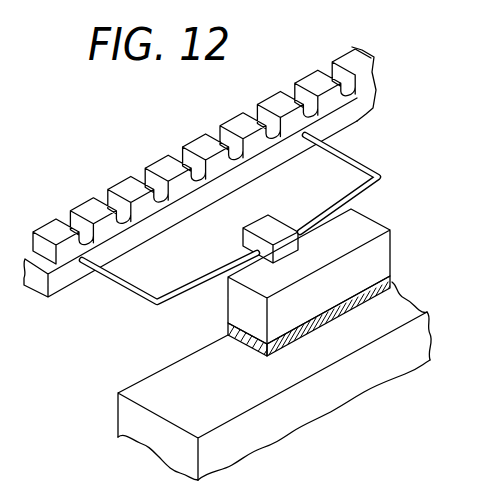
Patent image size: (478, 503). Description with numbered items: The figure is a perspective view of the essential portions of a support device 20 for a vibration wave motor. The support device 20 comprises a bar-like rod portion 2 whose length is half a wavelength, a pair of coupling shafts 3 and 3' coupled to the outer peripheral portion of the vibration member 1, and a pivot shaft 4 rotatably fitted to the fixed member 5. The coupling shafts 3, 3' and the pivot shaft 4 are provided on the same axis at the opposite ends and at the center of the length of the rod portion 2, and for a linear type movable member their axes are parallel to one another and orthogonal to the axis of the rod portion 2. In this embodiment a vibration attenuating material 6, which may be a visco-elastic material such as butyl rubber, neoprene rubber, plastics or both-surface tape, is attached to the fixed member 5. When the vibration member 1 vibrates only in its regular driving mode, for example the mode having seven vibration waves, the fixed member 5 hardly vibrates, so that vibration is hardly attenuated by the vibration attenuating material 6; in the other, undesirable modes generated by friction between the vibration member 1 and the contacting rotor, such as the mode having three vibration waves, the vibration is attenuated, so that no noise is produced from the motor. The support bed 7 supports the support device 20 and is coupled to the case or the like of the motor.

The vibration member 1 is at (164, 153).
The rod portion 2 is at (185, 306).
The coupling shaft 3 is at (169, 292).
The coupling shaft 3' is at (359, 178).
The pivot shaft 4 is at (273, 227).
The fixed member 5 is at (310, 310).
The vibration attenuating material 6 is at (233, 338).
The support bed 7 is at (127, 415).
The support device 20 is at (437, 198).